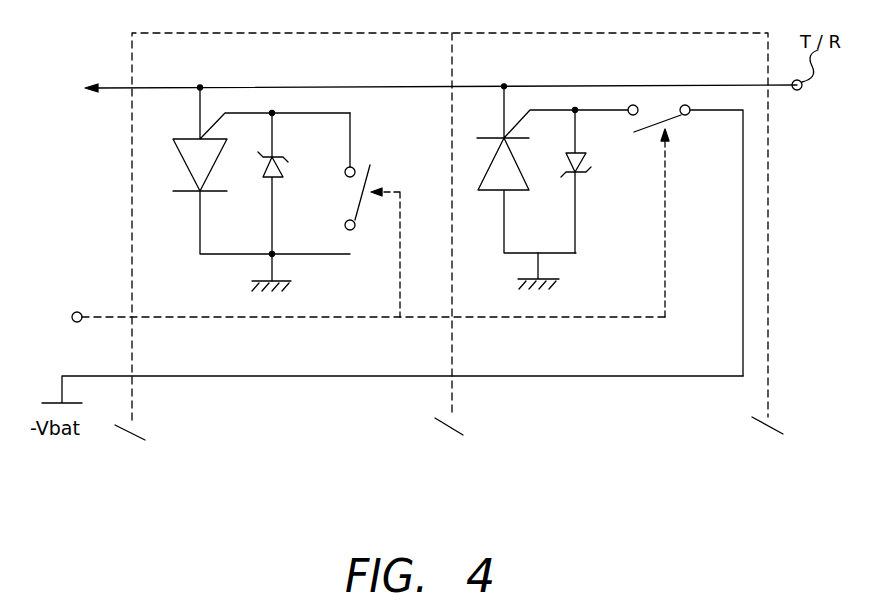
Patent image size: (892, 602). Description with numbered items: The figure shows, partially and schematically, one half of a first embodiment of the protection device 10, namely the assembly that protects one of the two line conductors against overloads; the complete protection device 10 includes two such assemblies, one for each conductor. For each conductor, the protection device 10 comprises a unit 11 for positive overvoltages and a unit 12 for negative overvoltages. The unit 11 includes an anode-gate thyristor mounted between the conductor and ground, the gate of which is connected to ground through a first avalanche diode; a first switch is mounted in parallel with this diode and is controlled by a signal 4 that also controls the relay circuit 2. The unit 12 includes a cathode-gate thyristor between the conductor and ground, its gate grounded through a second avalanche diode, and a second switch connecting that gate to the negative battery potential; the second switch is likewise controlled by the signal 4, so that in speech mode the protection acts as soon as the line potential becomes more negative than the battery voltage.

The relay circuit 2 is at (427, 90).
The control signal 4 is at (365, 305).
The protection device 10 is at (770, 212).
The unit for positive overvoltages 11 is at (263, 405).
The unit for negative overvoltages 12 is at (593, 405).